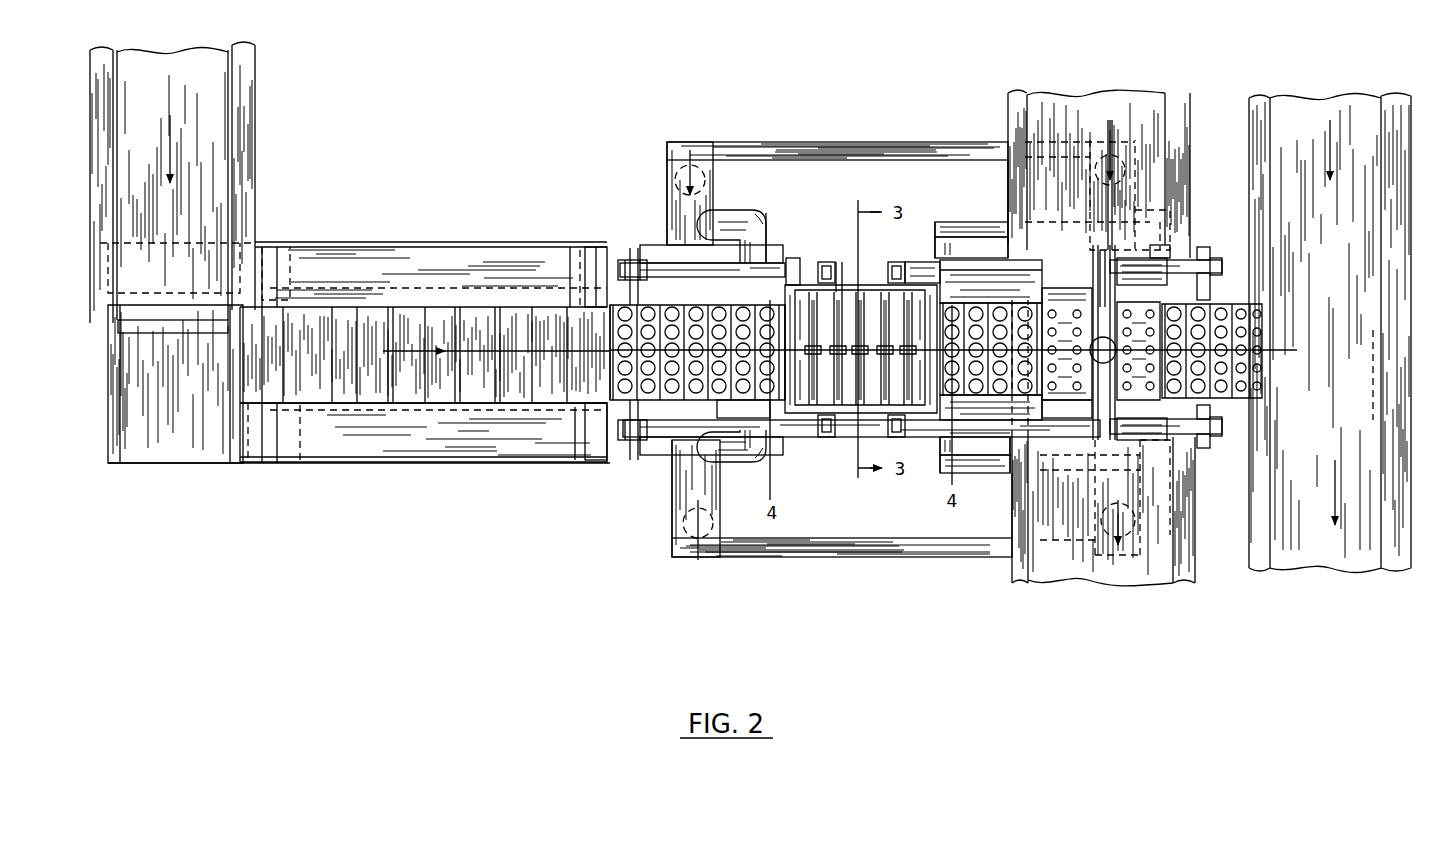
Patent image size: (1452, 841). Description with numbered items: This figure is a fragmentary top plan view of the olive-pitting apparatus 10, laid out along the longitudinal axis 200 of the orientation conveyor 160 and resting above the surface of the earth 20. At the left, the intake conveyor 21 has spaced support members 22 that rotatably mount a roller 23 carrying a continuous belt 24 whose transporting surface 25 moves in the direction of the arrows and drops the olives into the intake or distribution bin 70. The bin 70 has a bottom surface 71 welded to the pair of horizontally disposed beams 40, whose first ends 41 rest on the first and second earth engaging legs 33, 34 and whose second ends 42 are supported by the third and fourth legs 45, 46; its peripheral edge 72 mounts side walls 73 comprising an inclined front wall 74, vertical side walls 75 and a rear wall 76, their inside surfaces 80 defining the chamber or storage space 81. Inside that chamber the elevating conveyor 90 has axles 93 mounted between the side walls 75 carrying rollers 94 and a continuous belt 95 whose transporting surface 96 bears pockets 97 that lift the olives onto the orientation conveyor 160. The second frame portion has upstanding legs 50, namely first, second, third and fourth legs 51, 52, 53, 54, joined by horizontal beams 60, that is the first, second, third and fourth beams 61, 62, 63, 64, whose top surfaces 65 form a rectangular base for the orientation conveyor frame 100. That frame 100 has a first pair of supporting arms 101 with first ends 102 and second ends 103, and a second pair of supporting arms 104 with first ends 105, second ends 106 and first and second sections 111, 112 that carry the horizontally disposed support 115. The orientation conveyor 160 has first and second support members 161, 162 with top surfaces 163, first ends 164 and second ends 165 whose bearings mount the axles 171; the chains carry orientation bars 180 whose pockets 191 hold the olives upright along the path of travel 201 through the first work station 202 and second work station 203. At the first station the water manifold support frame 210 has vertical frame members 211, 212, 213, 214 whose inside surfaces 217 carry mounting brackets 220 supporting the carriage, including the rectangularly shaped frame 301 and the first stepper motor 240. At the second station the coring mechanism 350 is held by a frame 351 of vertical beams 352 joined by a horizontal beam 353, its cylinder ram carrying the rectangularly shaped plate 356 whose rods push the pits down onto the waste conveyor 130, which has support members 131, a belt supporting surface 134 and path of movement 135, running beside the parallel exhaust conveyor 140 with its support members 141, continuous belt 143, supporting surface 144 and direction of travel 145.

The apparatus for cutting a work object 10 is at (800, 230).
The surface of the earth 20 is at (488, 122).
The intake conveyor 21 is at (260, 108).
The support members 22 is at (243, 157).
The roller 23 is at (168, 292).
The continuous belt 24 is at (203, 105).
The transporting surface 25 is at (180, 218).
The first earth engaging leg 33 is at (275, 445).
The second earth engaging leg 34 is at (300, 242).
The horizontally disposed beams 40 is at (425, 250).
The first end of beam 41 is at (300, 270).
The second end of beam 42 is at (650, 250).
The third leg 45 is at (702, 470).
The fourth leg 46 is at (680, 215).
The upstanding legs 50 is at (690, 163).
The first leg 51 is at (700, 540).
The second leg 52 is at (1135, 525).
The third leg 53 is at (1128, 163).
The fourth leg 54 is at (667, 160).
The horizontally disposed beams 60 is at (665, 195).
The first beam 61 is at (868, 557).
The second beam 62 is at (1125, 195).
The third beam 63 is at (835, 142).
The fourth beam 64 is at (680, 548).
The top or supporting surface 65 is at (750, 142).
The intake or distribution bin 70 is at (375, 465).
The bottom surface 71 is at (390, 262).
The peripheral edge 72 is at (555, 243).
The side walls 73 is at (350, 240).
The inclined front wall 74 is at (182, 372).
The vertically disposed side walls 75 is at (490, 240).
The rear wall 76 is at (655, 450).
The inside surface 80 is at (350, 250).
The chamber or storage space 81 is at (465, 439).
The elevating conveyor 90 is at (445, 300).
The axles 93 is at (575, 262).
The rollers 94 is at (580, 280).
The continuous belt 95 is at (440, 408).
The transporting surface 96 is at (385, 330).
The pockets 97 is at (480, 403).
The orientation conveyor frame 100 is at (773, 215).
The first pair of supporting arms 101 is at (738, 216).
The first end of supporting arm 102 is at (720, 246).
The second end of supporting arm 103 is at (705, 228).
The second pair of supporting arms 104 is at (938, 220).
The first end of second arms 105 is at (935, 238).
The second end of second arms 106 is at (1148, 220).
The first section 111 is at (945, 258).
The second section 112 is at (962, 222).
The horizontally disposed support 115 is at (1168, 243).
The waste conveyor 130 is at (1045, 98).
The support members 131 is at (1010, 118).
The supporting surface 134 is at (1152, 134).
The path of movement 135 is at (1100, 160).
The exhaust conveyor 140 is at (1330, 90).
The support members 141 is at (1258, 138).
The continuous belt 143 is at (1355, 400).
The supporting surface 144 is at (1352, 353).
The direction of travel 145 is at (1328, 162).
The orientation conveyor 160 is at (1262, 320).
The first support member 161 is at (985, 420).
The second support member 162 is at (1000, 283).
The top surface 163 is at (783, 275).
The first end 164 is at (620, 263).
The second end 165 is at (1218, 262).
The axle 171 is at (600, 417).
The transportation or orientation bars 180 is at (715, 308).
The pockets 191 is at (1255, 376).
The longitudinal axis 200 is at (565, 350).
The path of travel 201 is at (720, 408).
The first work station 202 is at (877, 283).
The second work station 203 is at (1090, 432).
The water manifold support frame 210 is at (925, 268).
The first frame member 211 is at (820, 437).
The second frame member 212 is at (895, 437).
The third frame member 213 is at (897, 262).
The fourth frame member 214 is at (827, 262).
The inside surface 217 is at (838, 270).
The mounting bracket 220 is at (990, 280).
The first stepper motor 240 is at (792, 258).
The rectangularly shaped frame 301 is at (960, 303).
The coring mechanism 350 is at (1045, 288).
The frame 351 is at (1085, 262).
The vertically disposed beams 352 is at (1105, 265).
The horizontally disposed beam 353 is at (1107, 306).
The rectangularly shaped plate 356 is at (1090, 405).